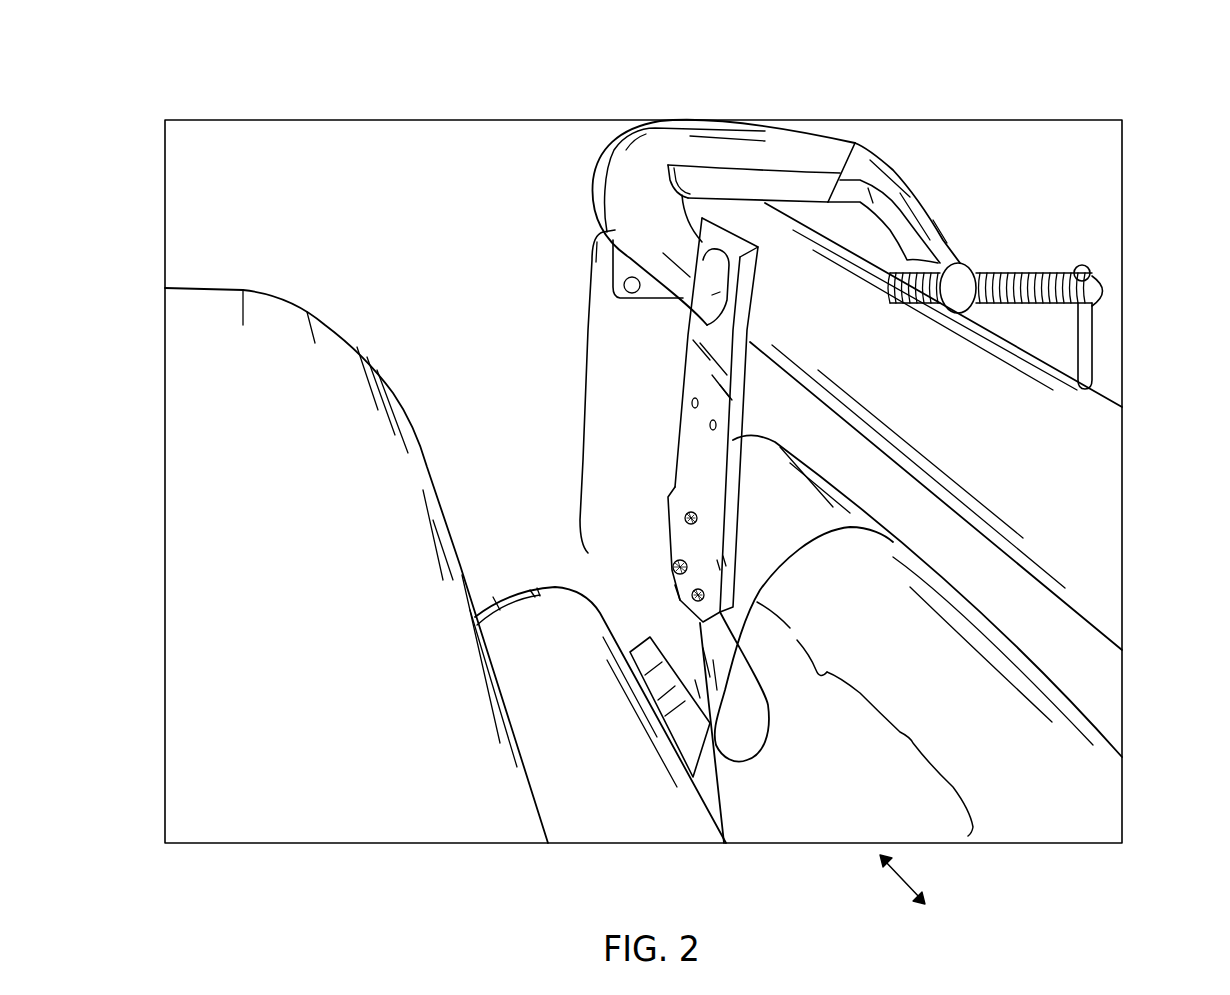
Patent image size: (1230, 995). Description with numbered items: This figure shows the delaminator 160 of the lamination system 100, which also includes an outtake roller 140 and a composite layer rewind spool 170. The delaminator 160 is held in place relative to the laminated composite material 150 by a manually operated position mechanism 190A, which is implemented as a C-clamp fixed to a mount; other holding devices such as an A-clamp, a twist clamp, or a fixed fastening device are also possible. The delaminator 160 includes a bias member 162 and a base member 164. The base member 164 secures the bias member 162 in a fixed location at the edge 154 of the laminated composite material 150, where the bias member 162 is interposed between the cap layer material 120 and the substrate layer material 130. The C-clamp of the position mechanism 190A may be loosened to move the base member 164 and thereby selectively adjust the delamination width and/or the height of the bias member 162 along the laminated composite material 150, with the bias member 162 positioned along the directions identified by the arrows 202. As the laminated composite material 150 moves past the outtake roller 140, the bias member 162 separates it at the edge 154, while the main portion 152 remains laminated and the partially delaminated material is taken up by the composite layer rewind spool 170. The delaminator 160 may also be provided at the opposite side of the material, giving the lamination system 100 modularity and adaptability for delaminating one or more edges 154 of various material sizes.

The lamination system 100 is at (1128, 89).
The cap layer material 120 is at (718, 792).
The substrate layer material 130 is at (698, 775).
The outtake roller 140 is at (773, 452).
The laminated composite material 150 is at (932, 653).
The main portion 152 is at (900, 754).
The edge 154 is at (804, 644).
The delaminator 160 is at (585, 388).
The bias member 162 is at (677, 650).
The base member 164 is at (690, 377).
The composite layer rewind spool 170 is at (560, 603).
The manually operated position mechanism 190A is at (752, 138).
The arrows 202 is at (900, 881).